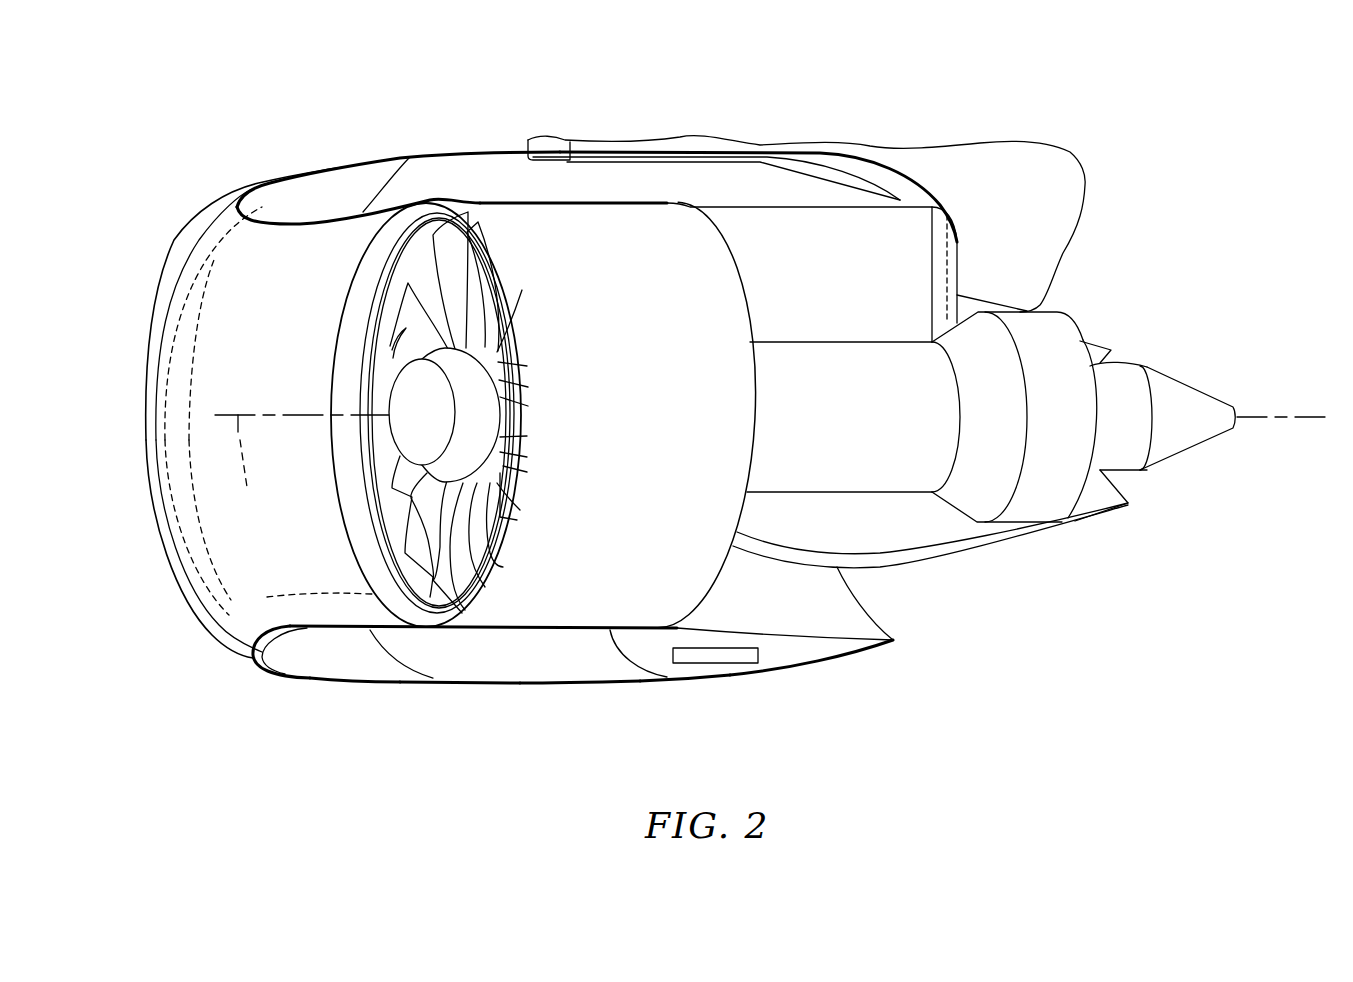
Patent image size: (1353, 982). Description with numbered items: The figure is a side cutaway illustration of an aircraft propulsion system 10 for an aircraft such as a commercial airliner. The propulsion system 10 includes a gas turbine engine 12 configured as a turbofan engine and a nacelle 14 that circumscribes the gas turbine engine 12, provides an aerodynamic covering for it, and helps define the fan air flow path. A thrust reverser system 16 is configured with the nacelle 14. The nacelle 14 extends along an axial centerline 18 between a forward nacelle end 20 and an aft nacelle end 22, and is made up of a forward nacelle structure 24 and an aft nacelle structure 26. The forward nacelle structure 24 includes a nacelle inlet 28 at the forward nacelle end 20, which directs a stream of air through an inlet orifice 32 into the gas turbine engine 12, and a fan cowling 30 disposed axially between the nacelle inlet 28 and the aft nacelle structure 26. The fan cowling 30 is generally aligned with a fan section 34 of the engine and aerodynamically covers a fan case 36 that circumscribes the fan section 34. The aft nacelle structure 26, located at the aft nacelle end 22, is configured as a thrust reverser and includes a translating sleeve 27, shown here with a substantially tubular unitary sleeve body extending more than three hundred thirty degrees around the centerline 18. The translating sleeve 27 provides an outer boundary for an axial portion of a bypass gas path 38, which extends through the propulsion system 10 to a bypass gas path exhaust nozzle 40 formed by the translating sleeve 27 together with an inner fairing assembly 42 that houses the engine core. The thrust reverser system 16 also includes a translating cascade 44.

The aircraft propulsion system 10 is at (215, 123).
The gas turbine engine 12 is at (508, 183).
The nacelle 14 is at (403, 150).
The thrust reverser system 16 is at (668, 686).
The axial centerline 18 is at (245, 468).
The forward nacelle end 20 is at (237, 662).
The aft nacelle end 22 is at (860, 604).
The forward nacelle structure 24 is at (477, 693).
The aft nacelle structure 26 is at (777, 673).
The translating sleeve 27 is at (830, 659).
The nacelle inlet 28 is at (320, 680).
The fan cowling 30 is at (560, 692).
The inlet orifice 32 is at (167, 452).
The fan section 34 is at (375, 513).
The fan case 36 is at (542, 624).
The bypass gas path 38 is at (812, 624).
The bypass gas path exhaust nozzle 40 is at (848, 583).
The inner fairing assembly 42 is at (1037, 540).
The translating cascade 44 is at (715, 664).